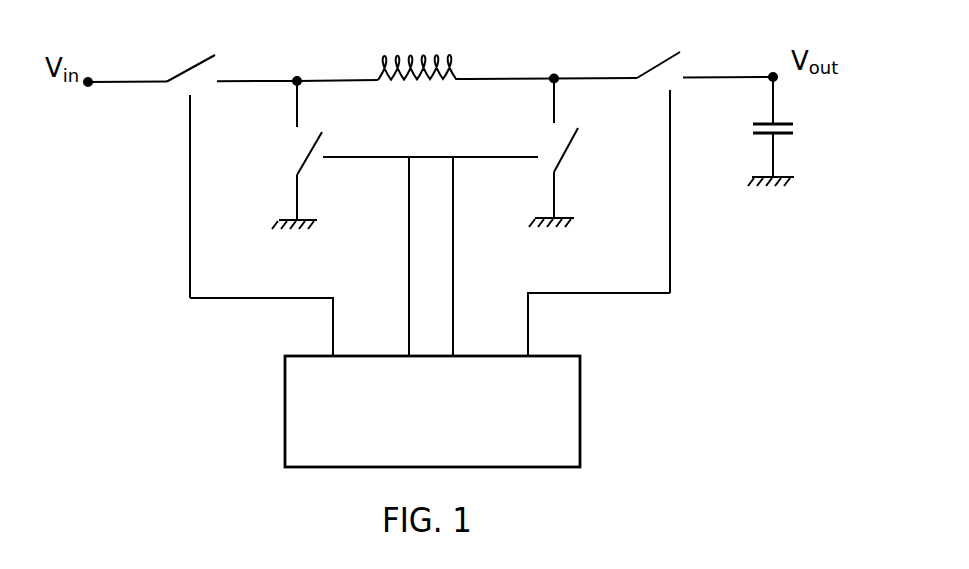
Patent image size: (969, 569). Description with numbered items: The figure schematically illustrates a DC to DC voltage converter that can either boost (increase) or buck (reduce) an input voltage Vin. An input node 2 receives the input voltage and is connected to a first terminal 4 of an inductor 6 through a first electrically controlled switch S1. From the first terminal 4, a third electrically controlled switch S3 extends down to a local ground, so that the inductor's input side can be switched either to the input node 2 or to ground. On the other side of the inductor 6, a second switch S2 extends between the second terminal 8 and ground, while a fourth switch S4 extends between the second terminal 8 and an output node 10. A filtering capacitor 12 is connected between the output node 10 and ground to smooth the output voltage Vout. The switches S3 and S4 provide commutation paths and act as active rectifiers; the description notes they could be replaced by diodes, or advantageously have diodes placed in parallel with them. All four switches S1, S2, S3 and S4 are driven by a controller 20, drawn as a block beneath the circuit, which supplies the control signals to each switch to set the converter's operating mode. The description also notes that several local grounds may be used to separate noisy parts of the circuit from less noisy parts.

The input node 2 is at (88, 86).
The first terminal of the inductor 4 is at (296, 78).
The inductor 6 is at (428, 50).
The second terminal of the inductor 8 is at (552, 76).
The output node 10 is at (770, 74).
The filtering capacitor 12 is at (793, 128).
The controller 20 is at (580, 415).
The first electrically controlled switch S1 is at (197, 63).
The second switch S2 is at (568, 143).
The third electrically controlled switch S3 is at (299, 146).
The fourth switch S4 is at (664, 60).